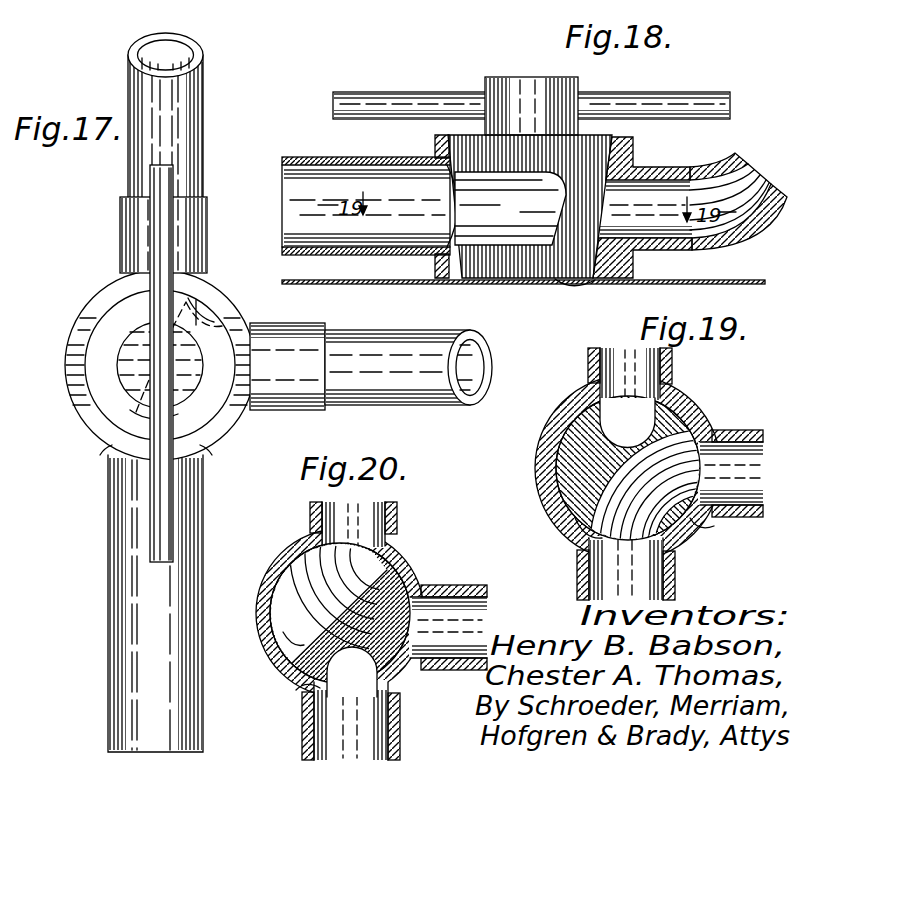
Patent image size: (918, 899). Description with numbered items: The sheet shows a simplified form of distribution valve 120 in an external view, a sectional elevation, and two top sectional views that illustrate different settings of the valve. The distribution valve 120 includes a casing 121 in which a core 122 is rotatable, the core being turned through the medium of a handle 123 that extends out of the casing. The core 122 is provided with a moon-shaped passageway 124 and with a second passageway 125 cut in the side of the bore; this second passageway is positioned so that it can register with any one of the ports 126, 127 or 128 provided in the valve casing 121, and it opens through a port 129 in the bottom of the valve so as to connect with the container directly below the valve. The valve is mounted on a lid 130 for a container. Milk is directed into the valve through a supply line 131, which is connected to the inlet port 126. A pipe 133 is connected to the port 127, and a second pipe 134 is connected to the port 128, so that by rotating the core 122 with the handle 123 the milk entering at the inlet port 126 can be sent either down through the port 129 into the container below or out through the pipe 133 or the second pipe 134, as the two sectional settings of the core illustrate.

In FIG. 18, the distribution valve 120 is at (690, 160).
In FIG. 17, the casing 121 is at (98, 304).
In FIG. 18, the casing 121 is at (624, 150).
In FIG. 19, the casing 121 is at (546, 430).
In FIG. 20, the casing 121 is at (413, 572).
In FIG. 17, the core 122 is at (100, 377).
In FIG. 18, the core 122 is at (462, 138).
In FIG. 19, the core 122 is at (578, 483).
In FIG. 20, the core 122 is at (395, 650).
In FIG. 17, the handle 123 is at (204, 229).
In FIG. 18, the handle 123 is at (418, 92).
In FIG. 17, the moon-shaped passageway 124 is at (127, 407).
In FIG. 19, the moon-shaped passageway 124 is at (590, 527).
In FIG. 20, the moon-shaped passageway 124 is at (298, 640).
In FIG. 17, the second passageway 125 is at (198, 296).
In FIG. 19, the second passageway 125 is at (660, 383).
In FIG. 20, the second passageway 125 is at (303, 694).
In FIG. 19, the inlet port 126 is at (695, 527).
In FIG. 20, the inlet port 126 is at (378, 712).
In FIG. 19, the port 127 is at (724, 444).
In FIG. 20, the port 127 is at (440, 592).
In FIG. 19, the port 128 is at (602, 380).
In FIG. 20, the port 128 is at (337, 532).
In FIG. 18, the port 129 is at (566, 283).
In FIG. 18, the lid 130 is at (711, 280).
In FIG. 17, the supply line 131 is at (108, 573).
In FIG. 18, the supply line 131 is at (342, 157).
In FIG. 19, the supply line 131 is at (678, 588).
In FIG. 20, the supply line 131 is at (302, 724).
In FIG. 17, the pipe 133 is at (300, 327).
In FIG. 17, the second pipe 134 is at (120, 214).